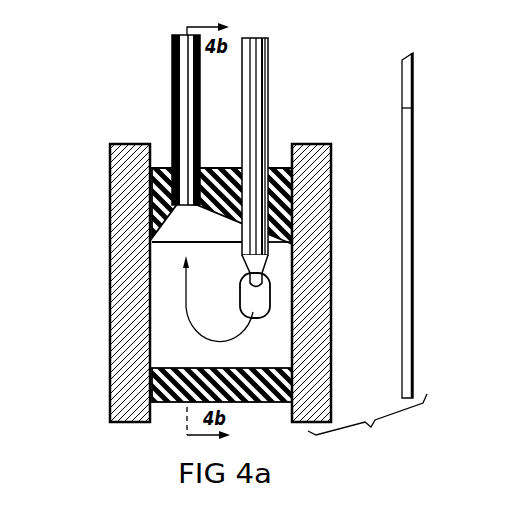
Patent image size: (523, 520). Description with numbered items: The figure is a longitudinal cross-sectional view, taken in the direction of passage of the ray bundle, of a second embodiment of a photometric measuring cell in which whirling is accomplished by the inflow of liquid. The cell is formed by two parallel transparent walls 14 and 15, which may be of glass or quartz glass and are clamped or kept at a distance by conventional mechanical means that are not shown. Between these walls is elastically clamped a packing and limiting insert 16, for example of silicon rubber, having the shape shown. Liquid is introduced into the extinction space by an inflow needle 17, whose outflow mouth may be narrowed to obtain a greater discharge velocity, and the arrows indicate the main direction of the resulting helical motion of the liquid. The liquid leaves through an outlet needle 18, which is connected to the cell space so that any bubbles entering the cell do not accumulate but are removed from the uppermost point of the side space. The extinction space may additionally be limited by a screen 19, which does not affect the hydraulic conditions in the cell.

The transparent wall 14 is at (118, 400).
The transparent wall 15 is at (335, 283).
The packing and limiting insert 16 is at (331, 162).
The inflow needle 17 is at (265, 53).
The outlet needle 18 is at (172, 107).
The screen 19 is at (410, 183).